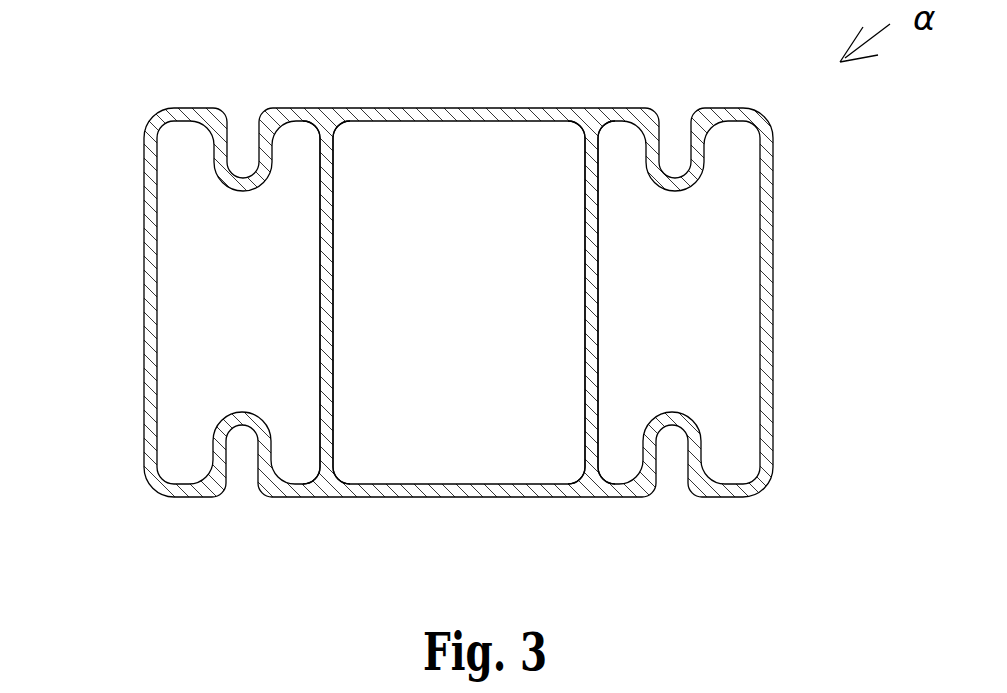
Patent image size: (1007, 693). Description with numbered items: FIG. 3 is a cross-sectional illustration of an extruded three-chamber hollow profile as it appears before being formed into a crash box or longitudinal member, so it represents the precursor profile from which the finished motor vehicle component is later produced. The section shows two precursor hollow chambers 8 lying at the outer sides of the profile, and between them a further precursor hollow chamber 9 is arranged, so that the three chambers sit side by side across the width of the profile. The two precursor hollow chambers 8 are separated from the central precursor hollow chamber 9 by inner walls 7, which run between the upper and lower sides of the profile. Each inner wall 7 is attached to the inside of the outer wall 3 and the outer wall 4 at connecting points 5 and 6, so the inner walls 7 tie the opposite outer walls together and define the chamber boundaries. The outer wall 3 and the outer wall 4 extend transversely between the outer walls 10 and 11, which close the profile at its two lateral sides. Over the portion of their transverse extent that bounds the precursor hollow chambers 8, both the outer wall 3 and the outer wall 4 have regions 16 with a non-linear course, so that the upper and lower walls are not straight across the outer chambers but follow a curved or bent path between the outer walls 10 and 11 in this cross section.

The outer wall 3 is at (455, 112).
The outer wall 4 is at (455, 488).
The connecting point 5 is at (320, 124).
The connecting point 6 is at (322, 475).
The inner wall 7 is at (328, 295).
The precursor hollow chamber 8 is at (175, 248).
The precursor hollow chamber 9 is at (385, 452).
The outer wall 10 is at (768, 312).
The outer wall 11 is at (145, 303).
The region 16 is at (272, 90).